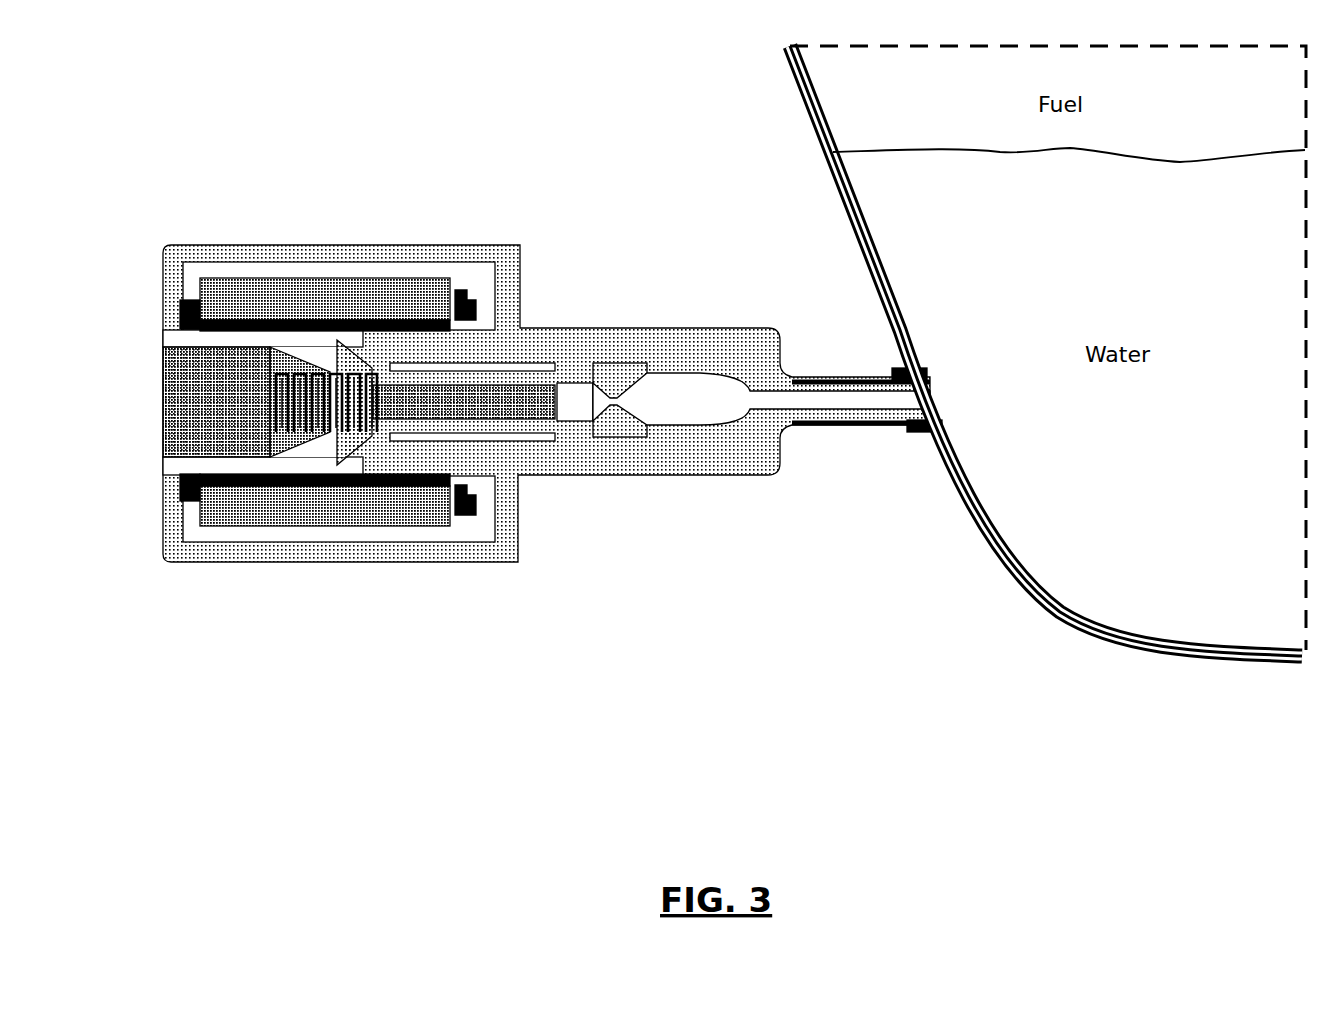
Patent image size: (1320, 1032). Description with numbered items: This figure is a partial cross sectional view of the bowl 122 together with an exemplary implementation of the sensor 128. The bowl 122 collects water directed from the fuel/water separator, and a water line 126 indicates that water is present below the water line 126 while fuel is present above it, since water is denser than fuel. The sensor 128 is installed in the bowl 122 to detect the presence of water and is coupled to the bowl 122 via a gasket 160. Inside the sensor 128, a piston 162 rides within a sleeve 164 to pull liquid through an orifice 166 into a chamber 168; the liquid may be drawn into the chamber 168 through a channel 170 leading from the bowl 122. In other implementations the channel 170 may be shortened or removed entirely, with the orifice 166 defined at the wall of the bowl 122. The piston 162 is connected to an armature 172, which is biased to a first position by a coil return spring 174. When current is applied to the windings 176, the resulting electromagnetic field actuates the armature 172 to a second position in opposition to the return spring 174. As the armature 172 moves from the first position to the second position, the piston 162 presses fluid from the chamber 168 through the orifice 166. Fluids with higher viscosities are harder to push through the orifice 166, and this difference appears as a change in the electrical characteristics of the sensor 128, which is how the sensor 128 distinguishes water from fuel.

The bowl 122 is at (1008, 580).
The water line 126 is at (1182, 163).
The sensor 128 is at (346, 564).
The gasket 160 is at (912, 432).
The piston 162 is at (521, 400).
The sleeve 164 is at (530, 424).
The orifice 166 is at (608, 395).
The chamber 168 is at (577, 400).
The channel 170 is at (832, 400).
The armature 172 is at (185, 397).
The coil return spring 174 is at (328, 370).
The windings 176 is at (257, 300).